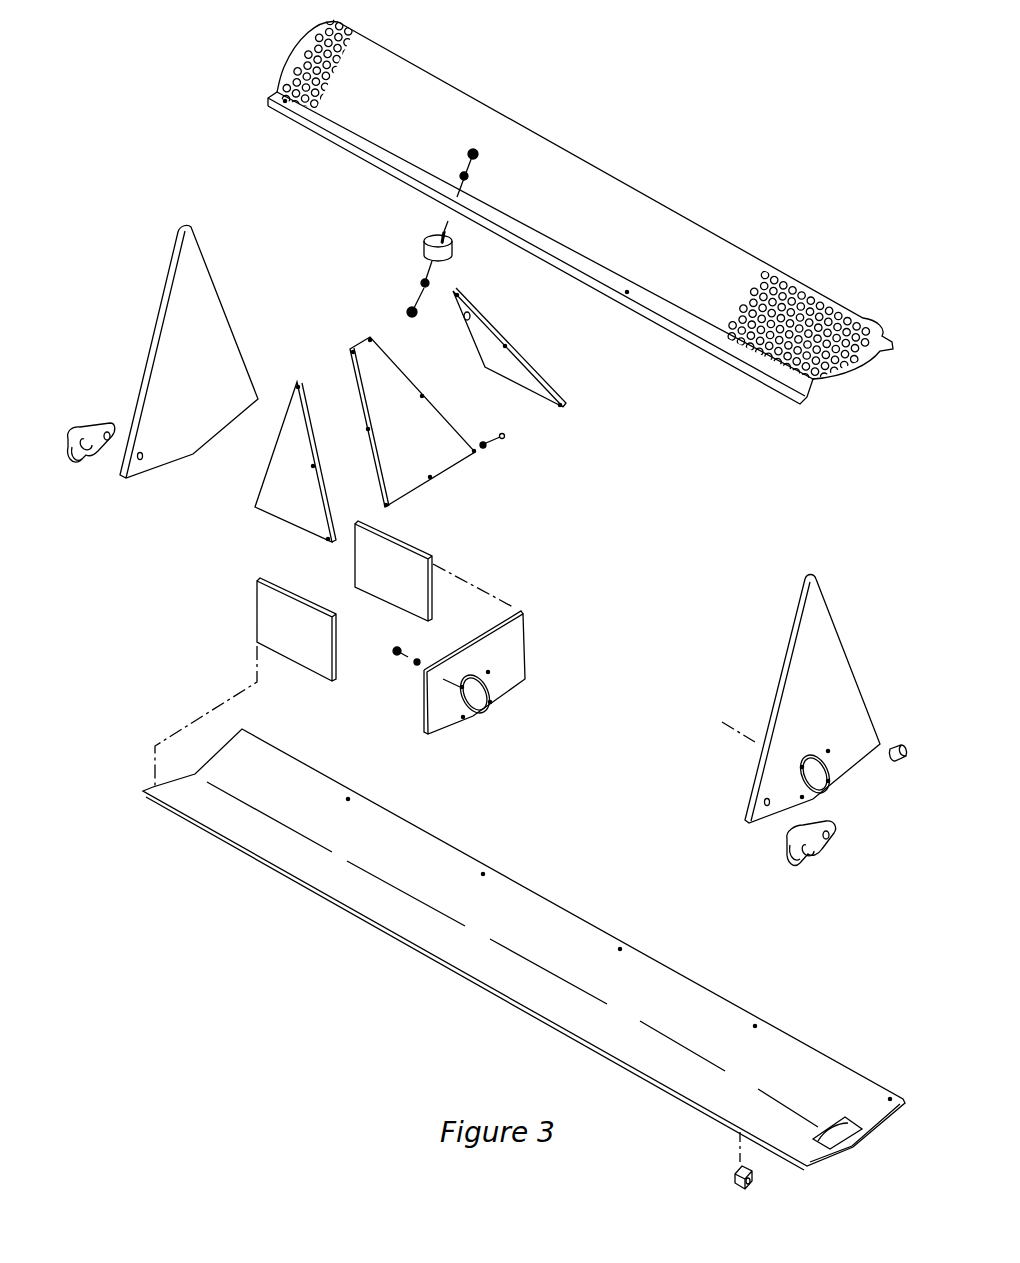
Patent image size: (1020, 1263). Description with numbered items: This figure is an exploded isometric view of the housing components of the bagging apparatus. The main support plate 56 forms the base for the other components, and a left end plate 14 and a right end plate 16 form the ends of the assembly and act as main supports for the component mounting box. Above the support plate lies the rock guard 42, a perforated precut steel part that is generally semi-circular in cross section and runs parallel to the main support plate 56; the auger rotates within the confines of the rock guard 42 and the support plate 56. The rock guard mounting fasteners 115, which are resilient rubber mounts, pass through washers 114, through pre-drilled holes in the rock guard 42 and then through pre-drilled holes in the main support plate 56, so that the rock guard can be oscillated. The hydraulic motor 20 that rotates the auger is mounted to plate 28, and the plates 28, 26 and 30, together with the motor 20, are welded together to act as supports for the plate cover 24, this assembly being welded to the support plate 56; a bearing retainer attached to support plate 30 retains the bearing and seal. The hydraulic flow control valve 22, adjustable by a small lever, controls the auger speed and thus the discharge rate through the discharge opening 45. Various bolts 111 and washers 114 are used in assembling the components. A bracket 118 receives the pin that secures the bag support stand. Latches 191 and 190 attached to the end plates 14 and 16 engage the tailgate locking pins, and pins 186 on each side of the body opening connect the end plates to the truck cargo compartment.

The left end plate 14 is at (157, 300).
The right end plate 16 is at (785, 648).
The hydraulic motor 20 is at (542, 375).
The hydraulic flow control valve 22 is at (253, 508).
The plate cover 24 is at (410, 433).
The plate 26 is at (423, 555).
The plate 28 is at (255, 615).
The support plate 30 is at (522, 650).
The rock guard 42 is at (803, 282).
The discharge opening 45 is at (847, 1123).
The main support plate 56 is at (355, 912).
The bolts 111 is at (410, 311).
The washers 114 is at (420, 281).
The rock guard mounting fasteners 115 is at (423, 233).
The bracket 118 is at (727, 1175).
The pins 186 is at (900, 767).
The latch 190 is at (792, 865).
The latch 191 is at (93, 460).